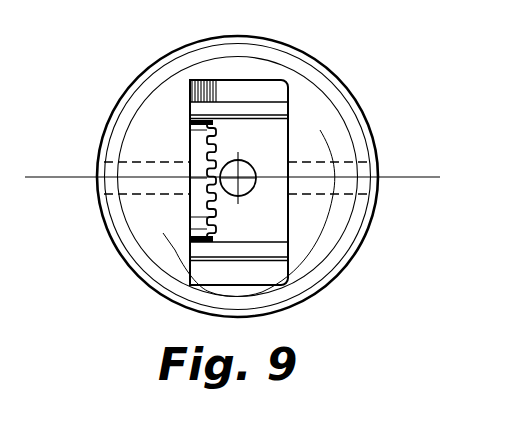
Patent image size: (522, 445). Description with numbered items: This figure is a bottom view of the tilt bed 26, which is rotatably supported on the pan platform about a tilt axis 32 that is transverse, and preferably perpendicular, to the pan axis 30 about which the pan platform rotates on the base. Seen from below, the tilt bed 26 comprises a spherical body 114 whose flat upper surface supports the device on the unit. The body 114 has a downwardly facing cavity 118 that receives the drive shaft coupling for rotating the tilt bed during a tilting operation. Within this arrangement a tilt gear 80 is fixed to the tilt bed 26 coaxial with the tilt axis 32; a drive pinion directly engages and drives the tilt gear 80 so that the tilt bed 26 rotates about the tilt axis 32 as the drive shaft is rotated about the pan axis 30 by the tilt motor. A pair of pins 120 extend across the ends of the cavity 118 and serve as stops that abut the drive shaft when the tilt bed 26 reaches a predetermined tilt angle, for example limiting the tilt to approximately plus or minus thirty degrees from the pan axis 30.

The tilt bed 26 is at (342, 80).
The pan axis 30 is at (242, 175).
The tilt axis 32 is at (394, 170).
The tilt gear 80 is at (192, 203).
The spherical body 114 is at (357, 253).
The cavity 118 is at (268, 212).
The pins 120 is at (228, 108).